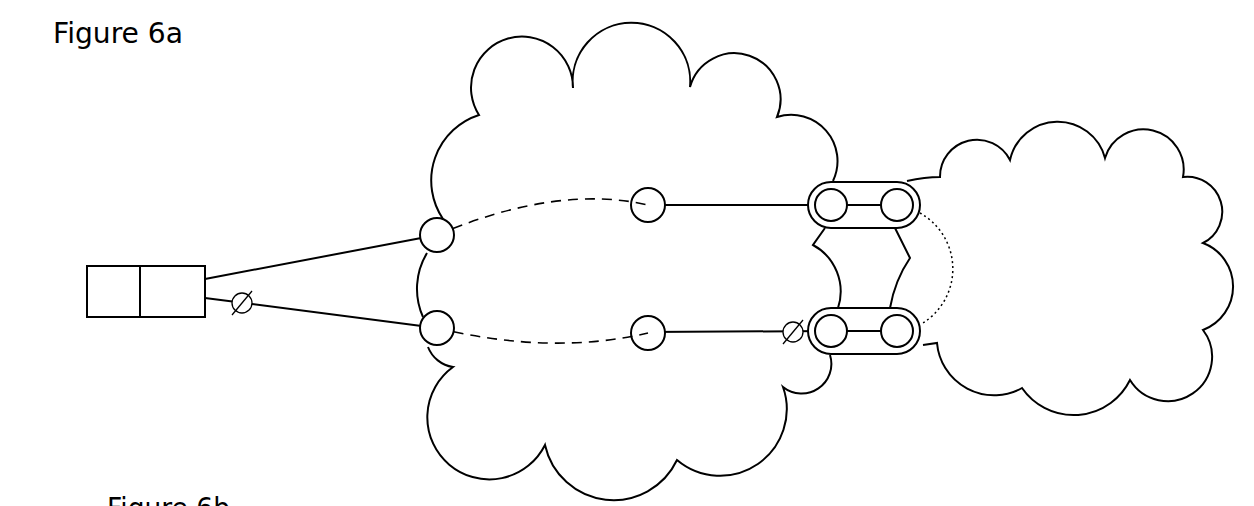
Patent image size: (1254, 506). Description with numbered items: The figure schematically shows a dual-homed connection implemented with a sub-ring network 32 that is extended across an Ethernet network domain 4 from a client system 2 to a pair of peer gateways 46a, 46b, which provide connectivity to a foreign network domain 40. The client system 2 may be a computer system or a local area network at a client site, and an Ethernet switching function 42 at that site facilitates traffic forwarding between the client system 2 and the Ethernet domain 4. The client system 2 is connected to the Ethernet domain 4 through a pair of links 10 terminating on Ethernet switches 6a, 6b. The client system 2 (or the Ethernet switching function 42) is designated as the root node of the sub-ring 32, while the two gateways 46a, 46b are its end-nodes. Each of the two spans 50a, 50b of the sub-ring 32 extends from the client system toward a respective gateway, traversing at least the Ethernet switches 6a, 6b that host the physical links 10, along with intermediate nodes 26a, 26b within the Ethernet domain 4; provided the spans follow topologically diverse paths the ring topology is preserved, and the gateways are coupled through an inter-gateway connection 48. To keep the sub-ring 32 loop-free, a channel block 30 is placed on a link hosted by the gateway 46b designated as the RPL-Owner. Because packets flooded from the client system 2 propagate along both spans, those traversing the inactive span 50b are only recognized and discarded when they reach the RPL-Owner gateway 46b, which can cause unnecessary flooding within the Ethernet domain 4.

The client system 2 is at (107, 266).
The Ethernet switching function 42 is at (178, 317).
The links 10 is at (313, 258).
The channel block 30 is at (252, 312).
The Ethernet switch 6a is at (454, 238).
The Ethernet switch 6b is at (454, 322).
The network node 26a is at (633, 195).
The network node 26b is at (641, 349).
The span 50a is at (530, 172).
The span 50b is at (543, 371).
The sub-ring network 32 is at (504, 105).
The Ethernet network domain 4 is at (697, 442).
The gateway 46a is at (858, 181).
The gateway 46b is at (860, 355).
The inter-gateway link 48 is at (953, 268).
The foreign network domain 40 is at (1087, 248).